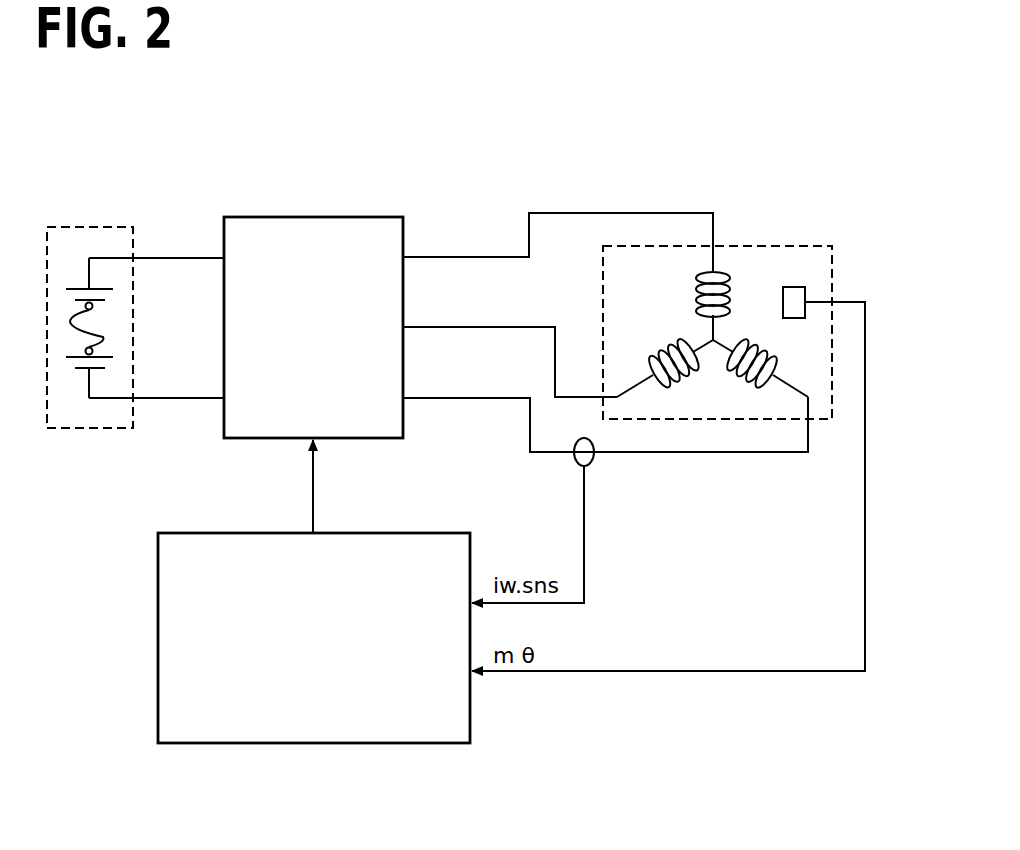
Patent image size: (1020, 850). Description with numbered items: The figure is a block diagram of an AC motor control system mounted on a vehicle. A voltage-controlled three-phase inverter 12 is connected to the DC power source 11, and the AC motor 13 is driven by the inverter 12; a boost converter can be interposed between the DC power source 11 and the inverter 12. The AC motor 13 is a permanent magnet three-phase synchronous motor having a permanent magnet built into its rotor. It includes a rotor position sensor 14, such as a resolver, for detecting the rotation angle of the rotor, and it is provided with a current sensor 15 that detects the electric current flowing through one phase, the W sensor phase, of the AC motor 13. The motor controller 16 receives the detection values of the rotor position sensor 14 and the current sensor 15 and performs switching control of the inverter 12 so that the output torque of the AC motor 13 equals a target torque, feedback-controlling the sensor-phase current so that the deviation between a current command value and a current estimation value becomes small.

The DC power source 11 is at (82, 225).
The inverter 12 is at (315, 217).
The AC motor 13 is at (783, 245).
The rotor position sensor 14 is at (795, 287).
The current sensor 15 is at (590, 463).
The motor controller 16 is at (313, 743).